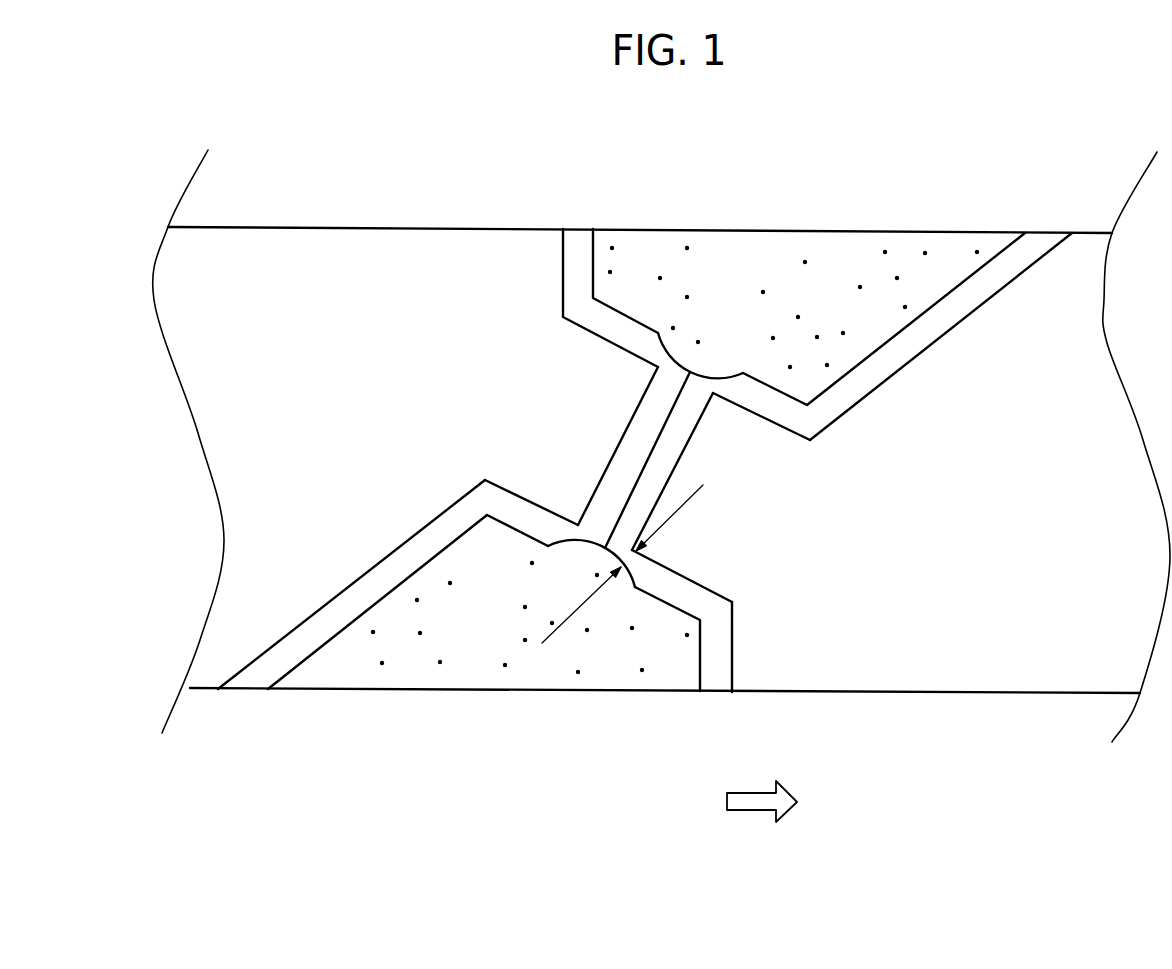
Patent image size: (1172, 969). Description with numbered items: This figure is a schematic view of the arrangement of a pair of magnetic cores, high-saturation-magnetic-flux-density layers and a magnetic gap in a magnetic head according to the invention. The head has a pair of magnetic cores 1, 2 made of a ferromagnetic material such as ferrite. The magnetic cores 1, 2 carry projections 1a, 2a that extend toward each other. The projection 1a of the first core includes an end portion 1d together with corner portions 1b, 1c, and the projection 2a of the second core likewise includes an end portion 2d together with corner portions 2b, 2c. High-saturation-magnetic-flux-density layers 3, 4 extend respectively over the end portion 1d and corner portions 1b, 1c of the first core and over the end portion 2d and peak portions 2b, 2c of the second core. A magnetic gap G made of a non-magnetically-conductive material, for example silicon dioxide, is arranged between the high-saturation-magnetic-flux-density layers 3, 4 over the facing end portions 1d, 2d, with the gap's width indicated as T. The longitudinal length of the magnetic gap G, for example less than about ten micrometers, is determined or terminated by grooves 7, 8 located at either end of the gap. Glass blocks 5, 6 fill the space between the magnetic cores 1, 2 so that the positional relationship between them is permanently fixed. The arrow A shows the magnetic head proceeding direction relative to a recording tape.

The magnetic core 1 is at (343, 498).
The projection 1a is at (485, 580).
The corner portion 1b is at (572, 512).
The corner portion 1c is at (658, 366).
The end portion 1d is at (627, 427).
The magnetic core 2 is at (978, 617).
The projection 2a is at (702, 568).
The corner portion 2b is at (645, 546).
The corner portion 2c is at (715, 395).
The end portion 2d is at (677, 472).
The high-saturation-magnetic-flux-density layer 3 is at (617, 330).
The high-saturation-magnetic-flux-density layer 4 is at (953, 310).
The glass block 5 is at (612, 655).
The glass block 6 is at (832, 300).
The groove 7 is at (567, 545).
The groove 8 is at (723, 373).
The magnetic gap G is at (653, 455).
The track width T is at (622, 564).
The arrow A is at (762, 818).